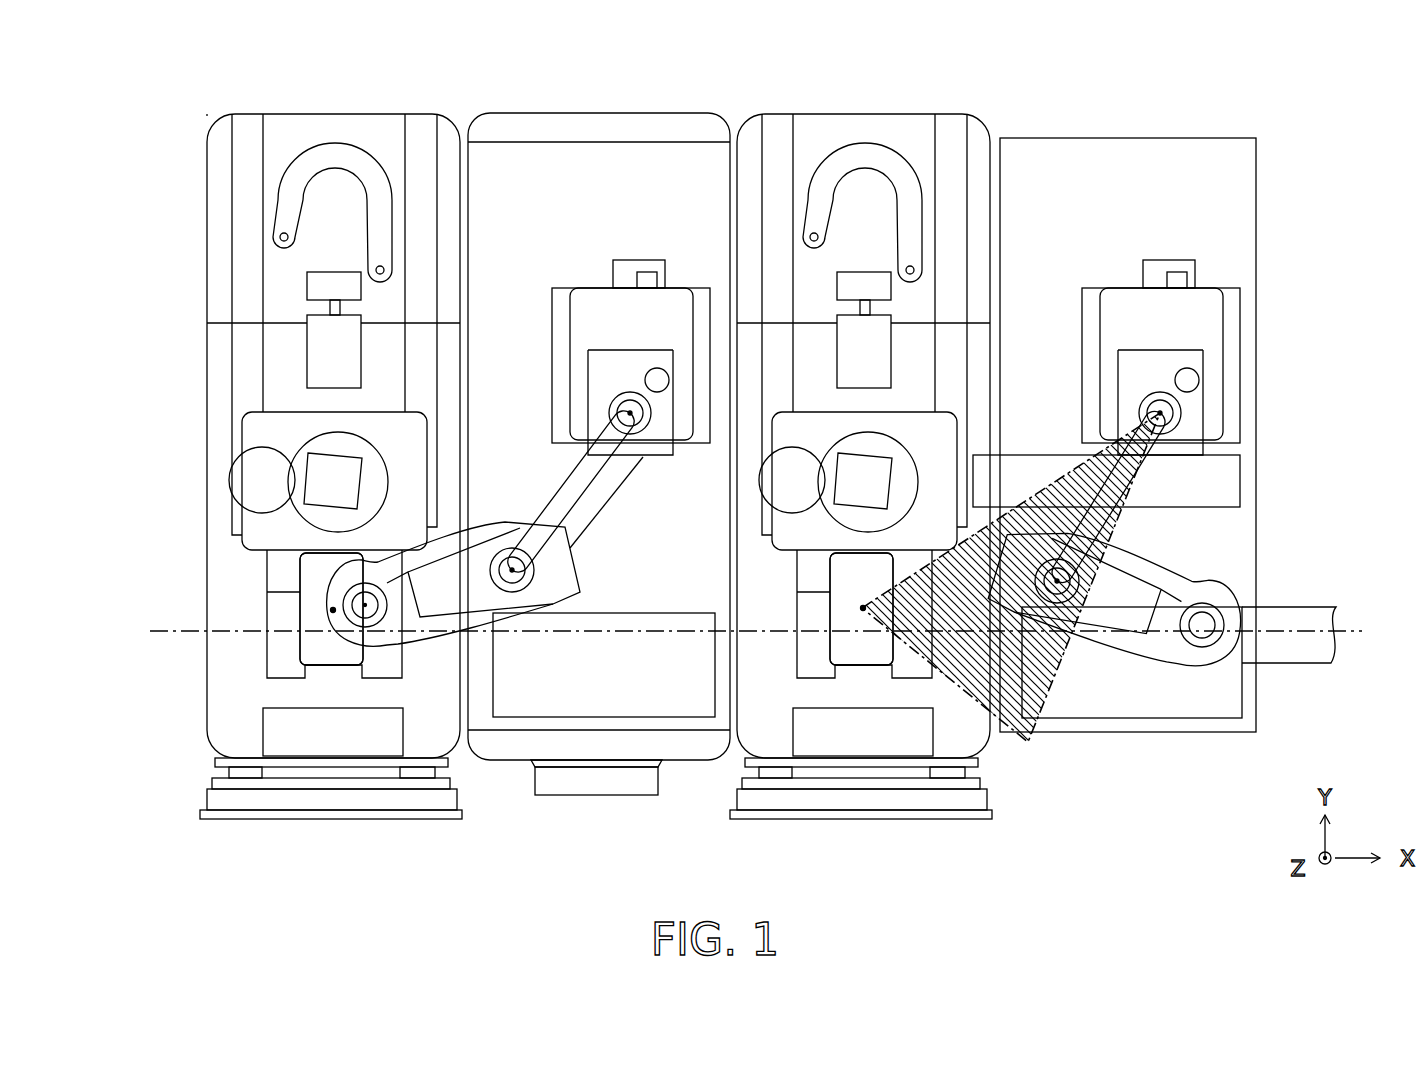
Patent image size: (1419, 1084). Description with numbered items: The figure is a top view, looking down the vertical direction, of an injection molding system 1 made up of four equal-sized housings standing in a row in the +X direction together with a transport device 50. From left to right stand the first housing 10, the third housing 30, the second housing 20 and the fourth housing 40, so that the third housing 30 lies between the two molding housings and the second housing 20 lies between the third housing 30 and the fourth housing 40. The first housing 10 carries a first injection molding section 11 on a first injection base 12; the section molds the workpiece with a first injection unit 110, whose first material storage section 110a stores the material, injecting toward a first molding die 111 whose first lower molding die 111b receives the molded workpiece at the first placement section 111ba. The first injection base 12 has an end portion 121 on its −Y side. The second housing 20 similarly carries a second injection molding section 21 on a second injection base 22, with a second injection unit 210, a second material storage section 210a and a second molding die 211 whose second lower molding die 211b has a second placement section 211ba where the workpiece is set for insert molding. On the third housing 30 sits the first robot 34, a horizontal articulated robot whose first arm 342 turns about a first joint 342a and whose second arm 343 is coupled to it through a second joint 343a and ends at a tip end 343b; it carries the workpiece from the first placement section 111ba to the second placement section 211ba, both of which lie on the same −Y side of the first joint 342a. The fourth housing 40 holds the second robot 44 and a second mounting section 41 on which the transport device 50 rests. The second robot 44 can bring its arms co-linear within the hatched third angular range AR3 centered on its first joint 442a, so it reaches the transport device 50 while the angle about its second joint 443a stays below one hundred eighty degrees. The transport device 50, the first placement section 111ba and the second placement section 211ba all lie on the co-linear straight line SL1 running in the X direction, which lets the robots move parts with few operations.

The injection molding system 1 is at (172, 100).
The first housing 10 is at (315, 105).
The first injection molding section 11 is at (196, 350).
The first injection unit 110 is at (258, 531).
The first material storage section 110a is at (262, 480).
The first molding die 111 is at (308, 588).
The first lower molding die 111b is at (331, 609).
The first placement section 111ba is at (333, 610).
The first injection base 12 is at (225, 660).
The end portion 121 is at (215, 752).
The third housing 30 is at (605, 105).
The first robot 34 is at (491, 470).
The first arm 342 is at (565, 455).
The first joint 342a is at (630, 415).
The second arm 343 is at (448, 600).
The second joint 343a is at (512, 572).
The tip end 343b is at (333, 612).
The second housing 20 is at (872, 105).
The second injection molding section 21 is at (912, 405).
The second injection unit 210 is at (948, 527).
The second material storage section 210a is at (790, 480).
The second molding die 211 is at (848, 650).
The second lower molding die 211b is at (861, 609).
The second placement section 211ba is at (863, 610).
The second injection base 22 is at (772, 735).
The fourth housing 40 is at (1132, 105).
The second mounting section 41 is at (1230, 185).
The second robot 44 is at (1215, 575).
The first joint 442a is at (1172, 400).
The second joint 443a is at (1090, 670).
The transport device 50 is at (1288, 650).
The third angular range AR3 is at (1070, 440).
The co-linear straight line SL1 is at (780, 631).